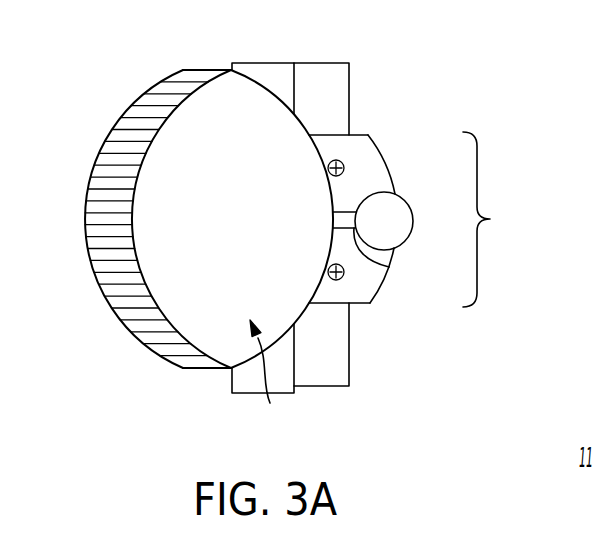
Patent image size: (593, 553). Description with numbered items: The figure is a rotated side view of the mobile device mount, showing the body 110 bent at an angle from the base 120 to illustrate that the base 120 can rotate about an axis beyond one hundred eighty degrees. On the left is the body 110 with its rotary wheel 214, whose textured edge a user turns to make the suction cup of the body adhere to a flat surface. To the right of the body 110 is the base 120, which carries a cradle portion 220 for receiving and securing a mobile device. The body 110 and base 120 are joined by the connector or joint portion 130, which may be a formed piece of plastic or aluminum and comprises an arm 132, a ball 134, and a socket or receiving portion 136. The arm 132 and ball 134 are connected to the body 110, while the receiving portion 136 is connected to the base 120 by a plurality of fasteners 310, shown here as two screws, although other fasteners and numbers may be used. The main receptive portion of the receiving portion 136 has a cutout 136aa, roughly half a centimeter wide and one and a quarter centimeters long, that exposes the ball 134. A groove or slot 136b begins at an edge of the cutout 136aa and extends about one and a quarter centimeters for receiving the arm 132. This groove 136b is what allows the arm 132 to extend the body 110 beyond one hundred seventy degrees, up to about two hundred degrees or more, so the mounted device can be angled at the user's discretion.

The body portion 110 is at (270, 379).
The base portion 120 is at (349, 351).
The connector or joint portion 130 is at (497, 219).
The arm 132 is at (332, 220).
The ball 134 is at (413, 222).
The socket or receiving portion 136 is at (375, 143).
The cutout 136aa is at (375, 230).
The groove or slot 136b is at (389, 269).
The rotary wheel 214 is at (93, 255).
The cradle portion 220 is at (266, 70).
The fasteners 310 is at (328, 168).